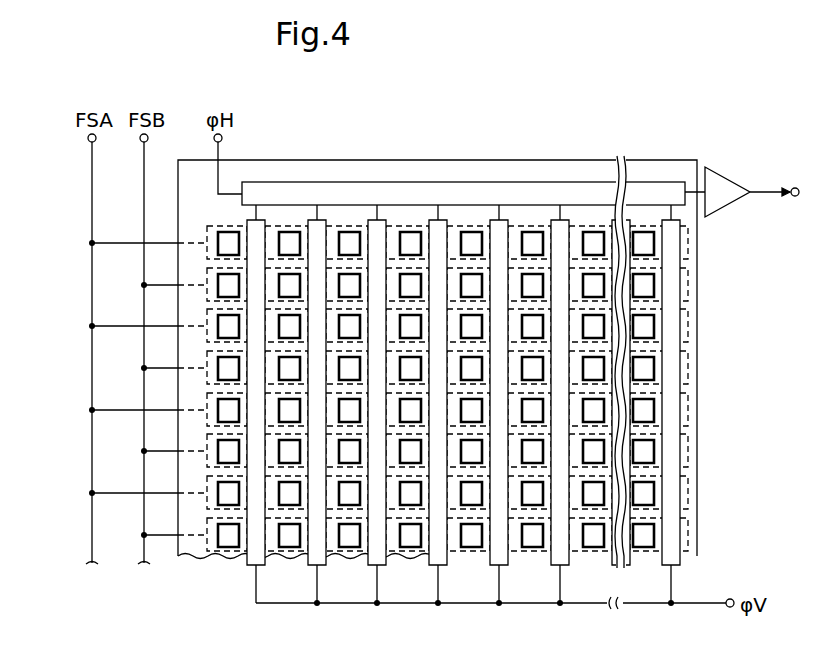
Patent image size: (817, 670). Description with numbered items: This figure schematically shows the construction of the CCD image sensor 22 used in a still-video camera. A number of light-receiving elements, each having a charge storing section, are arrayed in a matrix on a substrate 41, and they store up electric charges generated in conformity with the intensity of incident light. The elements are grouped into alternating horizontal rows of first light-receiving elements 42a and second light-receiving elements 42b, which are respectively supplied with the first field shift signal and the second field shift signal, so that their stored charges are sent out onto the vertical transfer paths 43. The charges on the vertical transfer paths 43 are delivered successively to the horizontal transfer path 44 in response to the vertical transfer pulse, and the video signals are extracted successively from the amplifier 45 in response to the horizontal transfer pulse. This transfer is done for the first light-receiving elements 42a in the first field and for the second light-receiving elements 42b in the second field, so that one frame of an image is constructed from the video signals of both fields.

The CCD image sensor 22 is at (220, 573).
The substrate 41 is at (510, 160).
The first light-receiving elements 42a is at (290, 238).
The second light-receiving elements 42b is at (285, 288).
The vertical transfer paths 43 is at (493, 562).
The horizontal transfer path 44 is at (390, 182).
The amplifier 45 is at (732, 183).